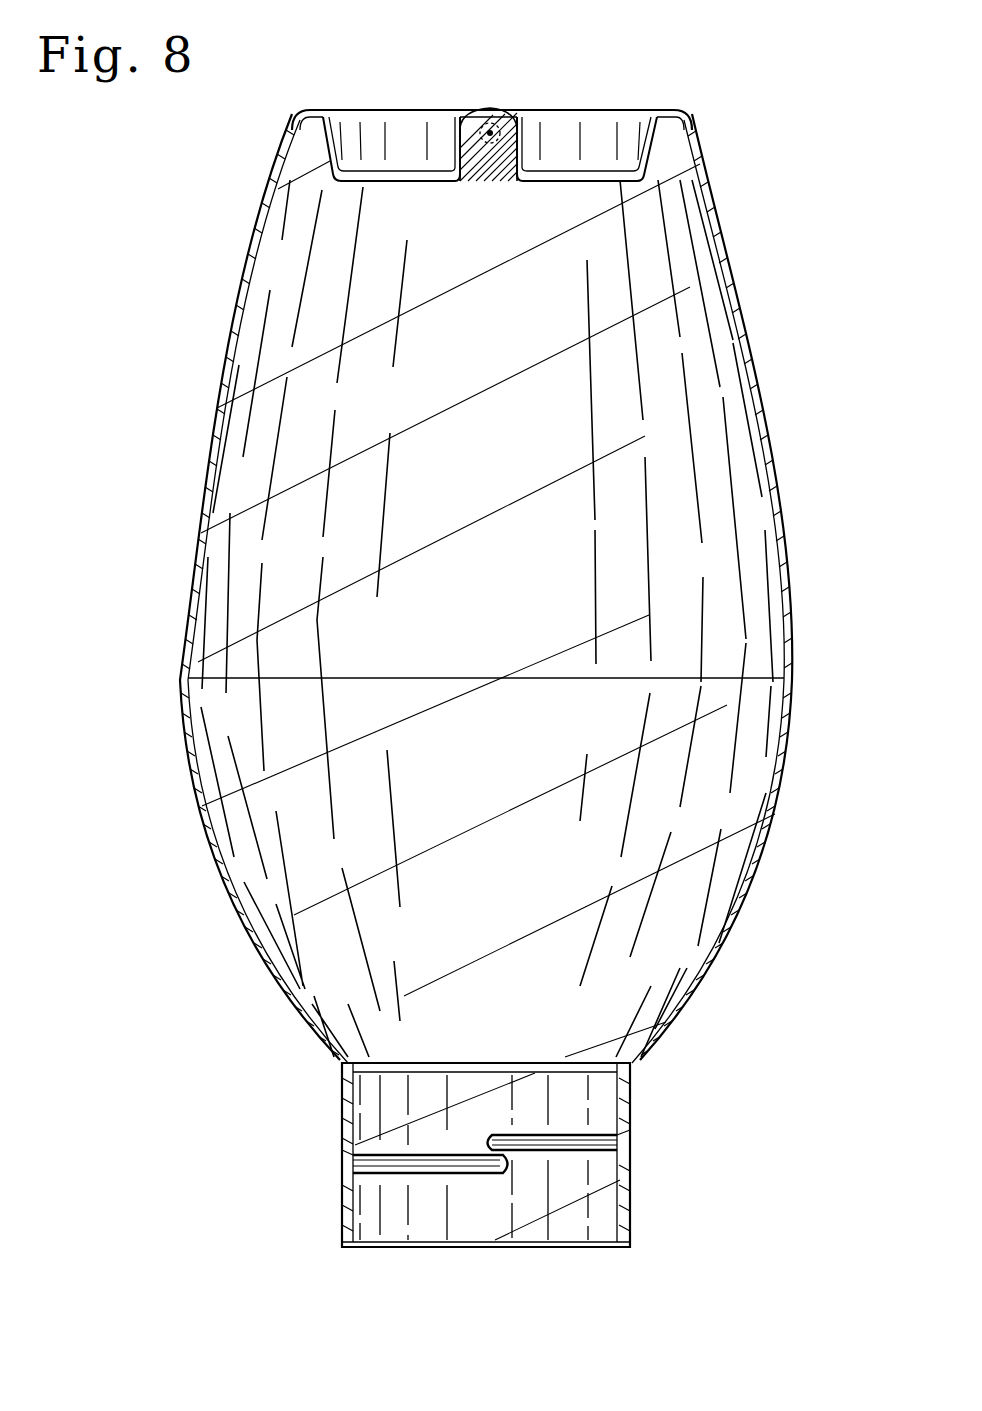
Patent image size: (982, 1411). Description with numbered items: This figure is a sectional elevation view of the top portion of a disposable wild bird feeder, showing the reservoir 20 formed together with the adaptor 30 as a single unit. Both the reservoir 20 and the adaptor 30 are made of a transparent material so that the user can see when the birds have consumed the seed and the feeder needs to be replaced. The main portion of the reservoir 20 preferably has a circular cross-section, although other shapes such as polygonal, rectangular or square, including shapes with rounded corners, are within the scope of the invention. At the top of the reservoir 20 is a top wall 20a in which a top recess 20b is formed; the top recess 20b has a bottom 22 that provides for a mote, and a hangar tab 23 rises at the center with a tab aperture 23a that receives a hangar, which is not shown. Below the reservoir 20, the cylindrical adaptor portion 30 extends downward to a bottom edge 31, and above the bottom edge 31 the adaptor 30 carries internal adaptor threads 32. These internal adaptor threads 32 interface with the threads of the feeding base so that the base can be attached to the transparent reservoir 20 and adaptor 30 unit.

The reservoir 20 is at (745, 320).
The top wall of container body 20a is at (680, 105).
The top recess 20b is at (598, 137).
The bottom 22 is at (428, 173).
The hangar tab 23 is at (513, 142).
The tab aperture 23a is at (491, 126).
The adaptor 30 is at (630, 1107).
The bottom edge 31 is at (593, 1248).
The internal adaptor threads 32 is at (483, 1173).